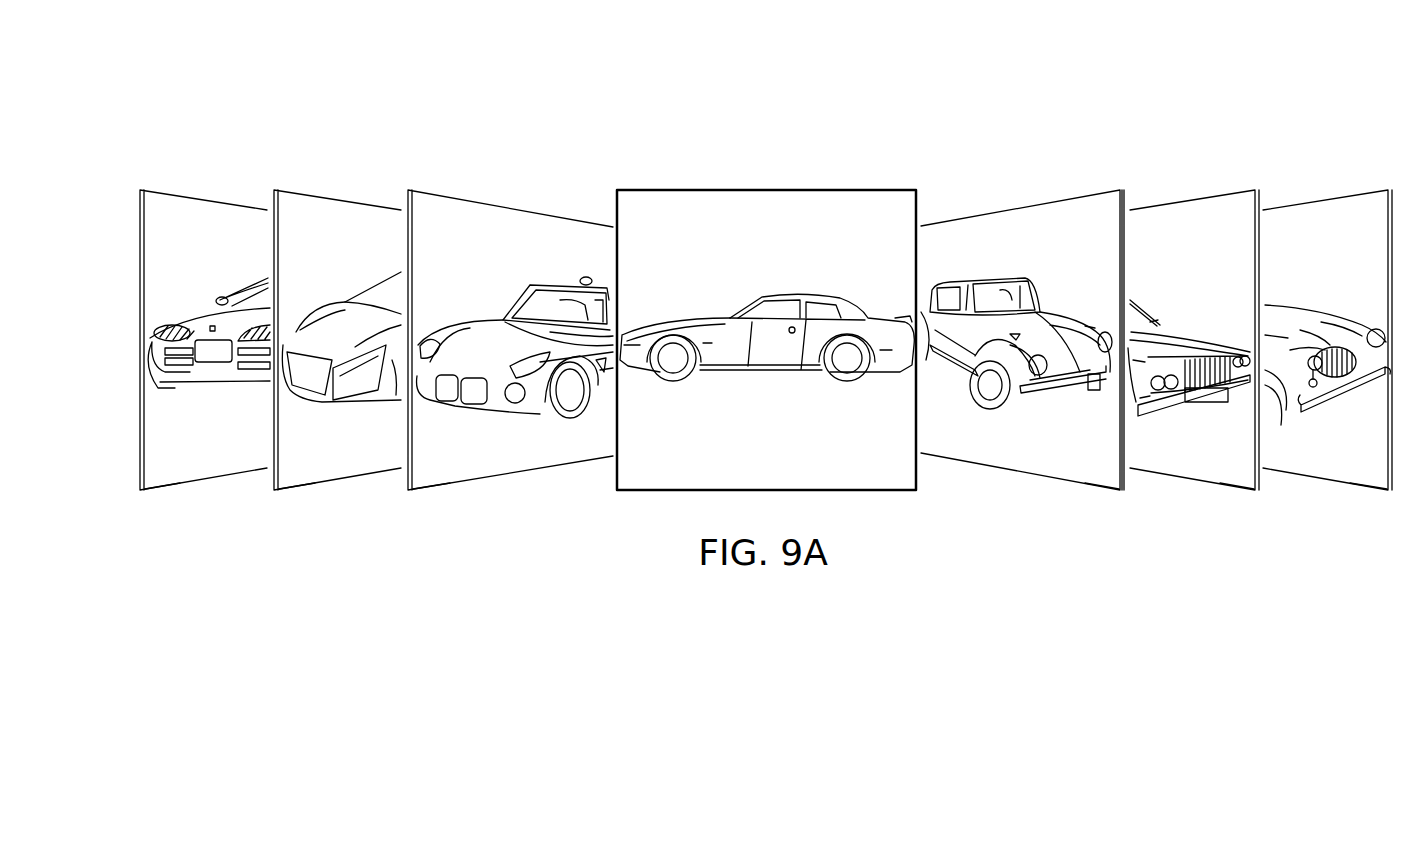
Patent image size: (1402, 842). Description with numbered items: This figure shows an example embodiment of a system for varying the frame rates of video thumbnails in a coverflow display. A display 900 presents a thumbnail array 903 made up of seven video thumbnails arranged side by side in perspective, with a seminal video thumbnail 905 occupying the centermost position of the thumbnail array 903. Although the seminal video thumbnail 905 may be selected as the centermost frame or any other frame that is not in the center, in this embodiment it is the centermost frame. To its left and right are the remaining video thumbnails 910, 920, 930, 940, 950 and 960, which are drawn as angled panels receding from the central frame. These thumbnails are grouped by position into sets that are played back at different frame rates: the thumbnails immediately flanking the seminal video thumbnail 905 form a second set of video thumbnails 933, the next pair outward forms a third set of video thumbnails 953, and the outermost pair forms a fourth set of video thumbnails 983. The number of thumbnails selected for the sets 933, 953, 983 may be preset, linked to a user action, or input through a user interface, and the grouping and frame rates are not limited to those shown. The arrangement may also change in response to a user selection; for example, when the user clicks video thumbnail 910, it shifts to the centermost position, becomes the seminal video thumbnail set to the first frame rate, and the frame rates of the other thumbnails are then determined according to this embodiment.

The display 900 is at (633, 73).
The thumbnail array 903 is at (1131, 136).
The seminal video thumbnail 905 is at (760, 190).
The video thumbnail 910 is at (475, 200).
The video thumbnail 920 is at (1057, 198).
The video thumbnail 930 is at (340, 199).
The video thumbnail 940 is at (1190, 199).
The video thumbnail 950 is at (207, 199).
The video thumbnail 960 is at (1324, 199).
The second set of video thumbnails 933 is at (488, 505).
The third set of video thumbnails 953 is at (354, 505).
The fourth set of video thumbnails 983 is at (220, 505).